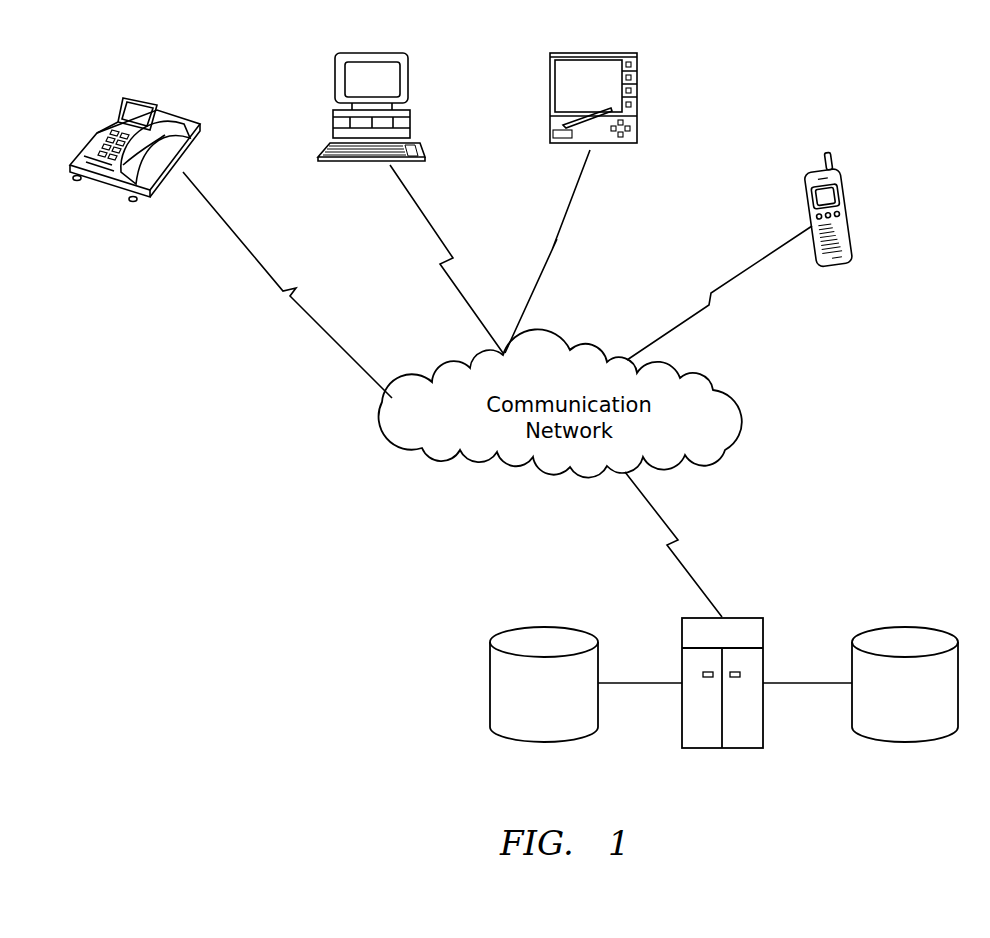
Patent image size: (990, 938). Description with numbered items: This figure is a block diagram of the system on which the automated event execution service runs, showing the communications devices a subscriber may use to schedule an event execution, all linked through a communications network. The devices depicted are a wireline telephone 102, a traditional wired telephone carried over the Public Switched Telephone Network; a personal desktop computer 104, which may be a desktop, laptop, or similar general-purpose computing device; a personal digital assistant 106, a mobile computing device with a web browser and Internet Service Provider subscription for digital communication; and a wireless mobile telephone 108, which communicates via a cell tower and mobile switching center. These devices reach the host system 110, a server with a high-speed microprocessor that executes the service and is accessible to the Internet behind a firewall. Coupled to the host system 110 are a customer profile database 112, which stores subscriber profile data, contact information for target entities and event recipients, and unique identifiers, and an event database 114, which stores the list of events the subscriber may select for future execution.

The wireline telephone 102 is at (167, 118).
The personal desktop computer 104 is at (408, 73).
The personal digital assistant (PDA) 106 is at (637, 63).
The wireless mobile telephone 108 is at (848, 188).
The host system 110 is at (740, 618).
The customer profile database 112 is at (508, 628).
The event database 114 is at (938, 628).